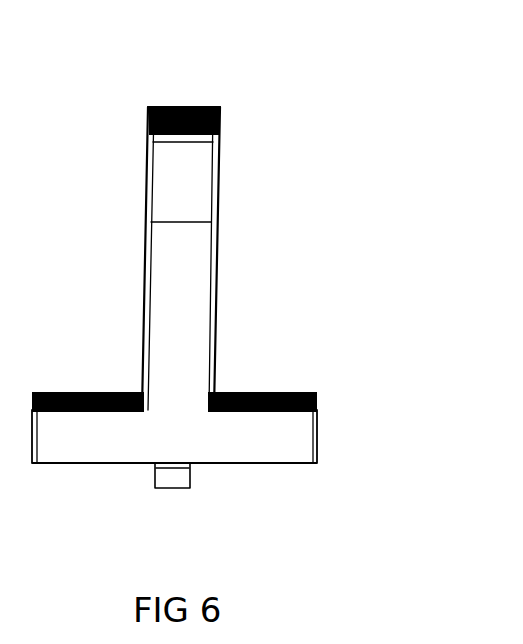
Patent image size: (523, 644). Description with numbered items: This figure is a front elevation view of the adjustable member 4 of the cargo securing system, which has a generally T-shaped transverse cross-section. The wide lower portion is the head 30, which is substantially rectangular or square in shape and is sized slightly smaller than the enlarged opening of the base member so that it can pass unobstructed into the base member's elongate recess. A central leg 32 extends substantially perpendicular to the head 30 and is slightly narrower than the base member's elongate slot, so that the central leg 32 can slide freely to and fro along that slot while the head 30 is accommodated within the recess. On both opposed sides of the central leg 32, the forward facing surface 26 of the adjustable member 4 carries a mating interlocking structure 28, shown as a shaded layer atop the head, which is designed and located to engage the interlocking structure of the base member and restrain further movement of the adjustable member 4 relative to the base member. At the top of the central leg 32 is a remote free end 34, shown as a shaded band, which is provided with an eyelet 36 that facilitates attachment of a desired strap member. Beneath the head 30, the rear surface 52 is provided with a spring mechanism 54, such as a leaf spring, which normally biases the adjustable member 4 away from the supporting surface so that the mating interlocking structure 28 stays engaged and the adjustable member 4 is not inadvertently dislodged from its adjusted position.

The adjustable member 4 is at (213, 92).
The forward facing surface 26 is at (88, 390).
The mating interlocking structure 28 is at (285, 392).
The head 30 is at (292, 437).
The central leg 32 is at (188, 312).
The remote free end 34 is at (160, 137).
The eyelet 36 is at (200, 180).
The rear surface 52 is at (83, 462).
The spring mechanism 54 is at (178, 477).